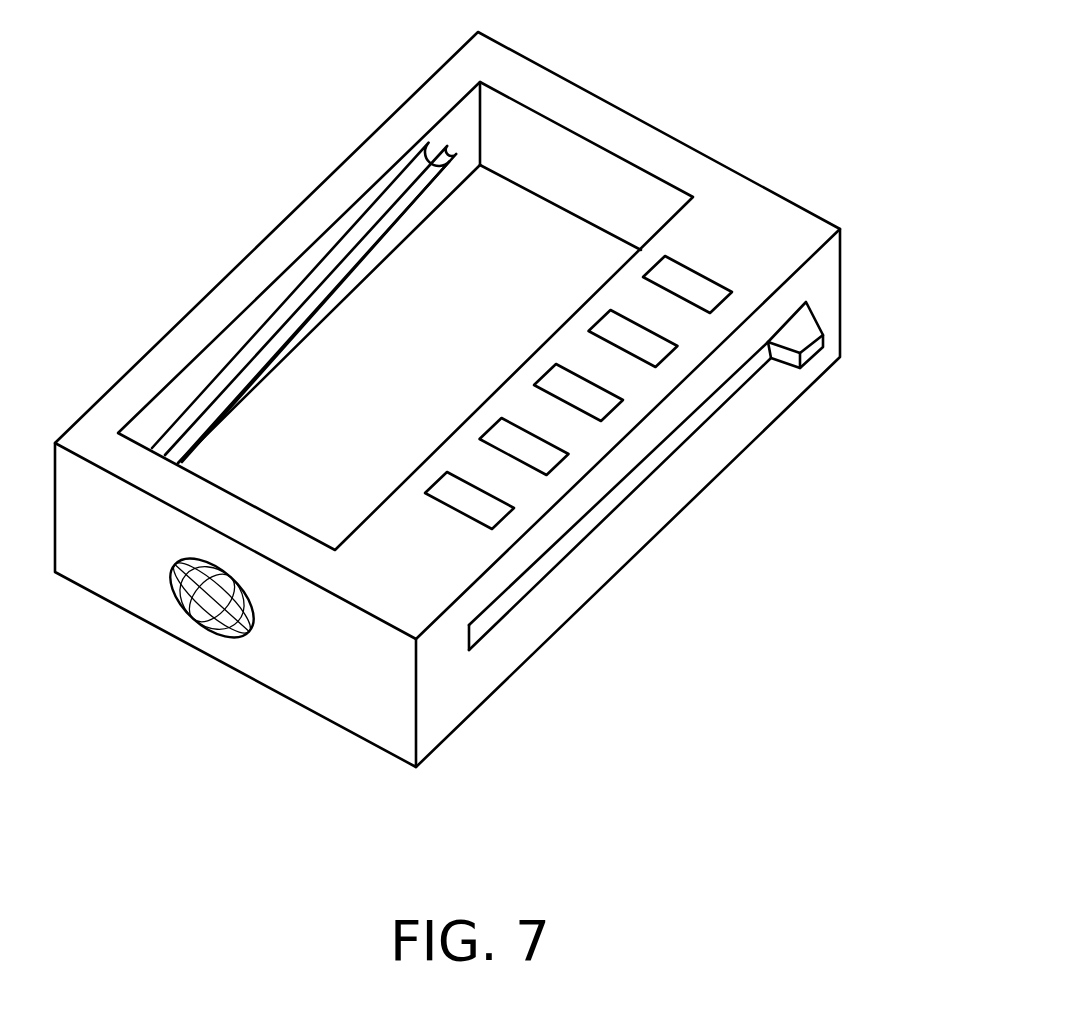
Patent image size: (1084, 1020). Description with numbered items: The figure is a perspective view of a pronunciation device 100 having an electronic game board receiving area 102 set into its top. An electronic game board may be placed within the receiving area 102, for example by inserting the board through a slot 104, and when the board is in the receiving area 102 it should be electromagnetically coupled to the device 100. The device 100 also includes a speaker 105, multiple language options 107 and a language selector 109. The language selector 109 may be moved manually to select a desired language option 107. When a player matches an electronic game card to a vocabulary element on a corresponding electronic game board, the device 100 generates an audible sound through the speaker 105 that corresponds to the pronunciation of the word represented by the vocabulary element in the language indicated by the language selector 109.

The pronunciation device 100 is at (740, 96).
The electronic game board receiving area 102 is at (488, 247).
The slot 104 is at (323, 268).
The speaker 105 is at (198, 630).
The language options 107 is at (712, 313).
The language selector 109 is at (824, 346).